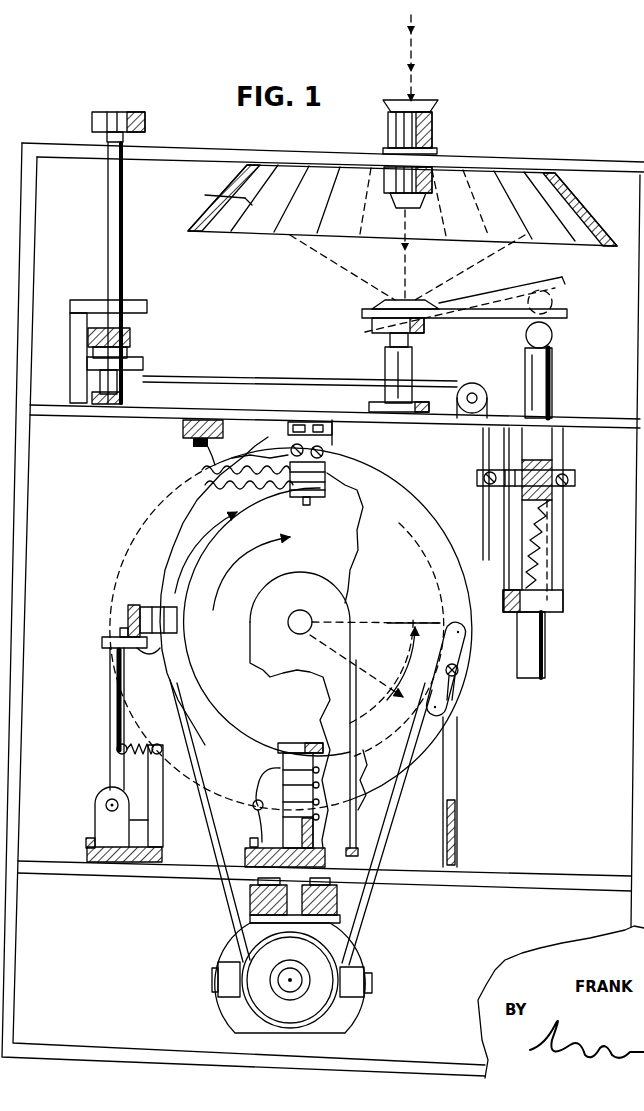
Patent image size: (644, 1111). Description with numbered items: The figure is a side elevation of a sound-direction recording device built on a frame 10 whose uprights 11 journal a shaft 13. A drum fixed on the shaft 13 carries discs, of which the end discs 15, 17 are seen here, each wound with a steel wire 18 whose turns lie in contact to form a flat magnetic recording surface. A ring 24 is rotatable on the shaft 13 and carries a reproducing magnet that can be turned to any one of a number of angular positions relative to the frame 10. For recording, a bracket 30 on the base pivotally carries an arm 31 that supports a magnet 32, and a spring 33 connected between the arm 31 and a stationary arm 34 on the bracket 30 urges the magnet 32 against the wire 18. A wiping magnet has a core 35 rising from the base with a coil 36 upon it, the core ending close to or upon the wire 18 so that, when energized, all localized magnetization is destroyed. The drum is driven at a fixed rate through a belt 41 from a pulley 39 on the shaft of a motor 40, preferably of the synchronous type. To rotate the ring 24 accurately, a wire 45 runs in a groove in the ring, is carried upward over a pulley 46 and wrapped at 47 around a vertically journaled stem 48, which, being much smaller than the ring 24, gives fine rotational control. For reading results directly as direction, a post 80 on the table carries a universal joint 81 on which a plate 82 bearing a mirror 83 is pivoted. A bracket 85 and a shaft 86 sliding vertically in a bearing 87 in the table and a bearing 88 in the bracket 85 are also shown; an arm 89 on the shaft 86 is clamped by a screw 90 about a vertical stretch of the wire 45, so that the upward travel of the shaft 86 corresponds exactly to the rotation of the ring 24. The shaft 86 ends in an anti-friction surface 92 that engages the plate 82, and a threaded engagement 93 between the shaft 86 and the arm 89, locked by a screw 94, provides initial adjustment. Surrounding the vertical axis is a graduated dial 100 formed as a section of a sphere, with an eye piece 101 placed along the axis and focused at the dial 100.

The frame 10 is at (463, 882).
The uprights 11 is at (291, 646).
The shaft 13 is at (310, 618).
The disc 15 is at (305, 537).
The disc 17 is at (257, 462).
The steel wire 18 is at (221, 541).
The ring 24 is at (470, 668).
The bracket 30 is at (92, 812).
The arm 31 is at (110, 765).
The magnet 32 is at (140, 605).
The spring 33 is at (154, 758).
The stationary arm 34 is at (185, 800).
The core 35 is at (285, 805).
The coil 36 is at (268, 780).
The pulley 39 is at (290, 987).
The motor 40 is at (345, 965).
The belt 41 is at (340, 916).
The wire 45 is at (472, 512).
The pulley 46 is at (480, 386).
The wrapped portion 47 is at (120, 385).
The stem 48 is at (125, 296).
The post 80 is at (372, 356).
The universal joint 81 is at (425, 325).
The plate 82 is at (362, 312).
The mirror 83 is at (415, 298).
The bracket 85 is at (565, 549).
The shaft 86 is at (555, 393).
The bearing 87 is at (560, 419).
The bearing 88 is at (560, 613).
The arm 89 is at (576, 476).
The screw 90 is at (478, 475).
The anti-friction surface 92 is at (553, 336).
The threaded engagement 93 is at (556, 472).
The screw 94 is at (575, 487).
The dial 100 is at (600, 222).
The eye piece 101 is at (438, 120).